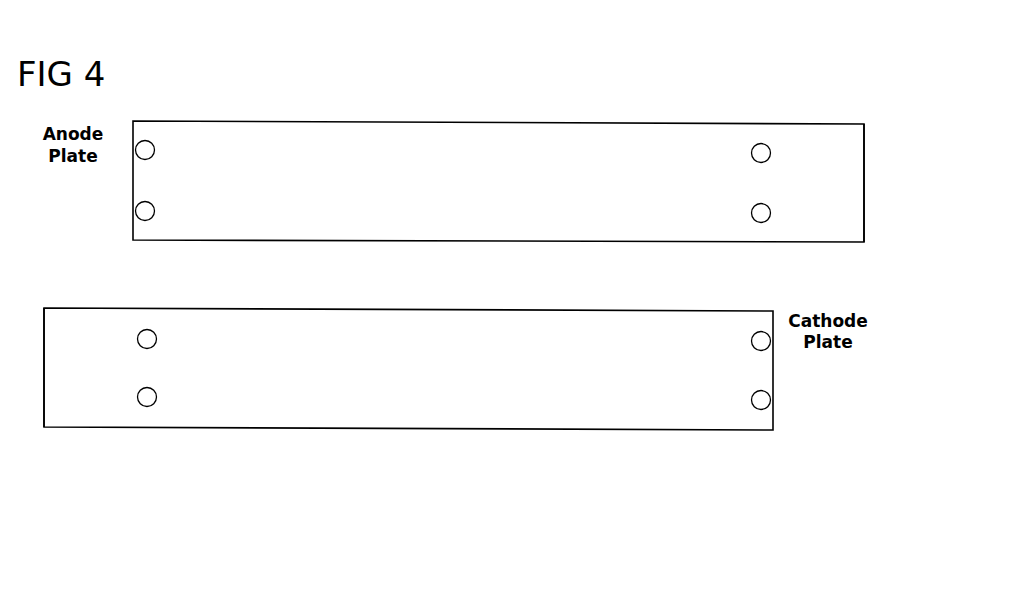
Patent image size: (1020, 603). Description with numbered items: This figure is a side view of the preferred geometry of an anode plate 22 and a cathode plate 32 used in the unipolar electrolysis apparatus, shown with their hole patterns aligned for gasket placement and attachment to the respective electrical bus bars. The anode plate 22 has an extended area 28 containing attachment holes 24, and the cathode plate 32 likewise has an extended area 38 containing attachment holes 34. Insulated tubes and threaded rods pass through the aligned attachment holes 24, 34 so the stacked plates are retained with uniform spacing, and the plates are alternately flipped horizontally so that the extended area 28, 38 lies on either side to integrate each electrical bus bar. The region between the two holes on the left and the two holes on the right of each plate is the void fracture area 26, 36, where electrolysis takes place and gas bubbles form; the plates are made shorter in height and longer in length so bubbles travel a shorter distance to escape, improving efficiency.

The anode plate 22 is at (438, 110).
The attachment holes 24 is at (146, 148).
The void fracture area 26 is at (474, 213).
The extended area 28 is at (841, 183).
The cathode plate 32 is at (389, 440).
The attachment holes 34 is at (145, 400).
The void fracture area 36 is at (550, 410).
The extended area 38 is at (79, 323).